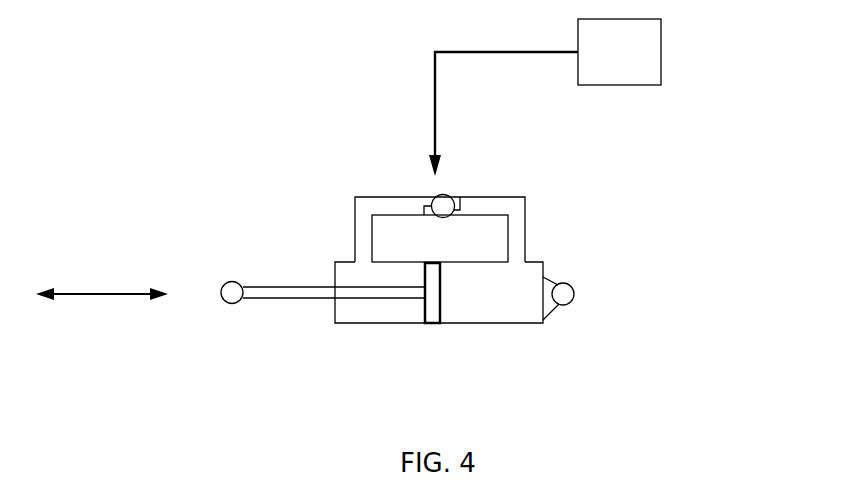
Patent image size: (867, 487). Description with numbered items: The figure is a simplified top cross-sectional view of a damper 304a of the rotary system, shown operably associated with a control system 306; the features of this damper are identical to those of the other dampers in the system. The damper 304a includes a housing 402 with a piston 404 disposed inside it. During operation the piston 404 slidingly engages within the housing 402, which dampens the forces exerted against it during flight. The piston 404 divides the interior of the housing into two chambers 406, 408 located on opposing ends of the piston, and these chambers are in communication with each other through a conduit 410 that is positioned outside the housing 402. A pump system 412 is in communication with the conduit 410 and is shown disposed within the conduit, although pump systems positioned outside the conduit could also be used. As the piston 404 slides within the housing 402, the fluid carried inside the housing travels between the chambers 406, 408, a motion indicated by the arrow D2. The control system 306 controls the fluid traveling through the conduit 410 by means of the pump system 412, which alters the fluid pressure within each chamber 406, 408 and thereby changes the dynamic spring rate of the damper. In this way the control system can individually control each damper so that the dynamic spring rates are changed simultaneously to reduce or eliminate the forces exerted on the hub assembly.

The damper 304a is at (262, 100).
The control system 306 is at (661, 43).
The housing 402 is at (334, 310).
The piston 404 is at (428, 325).
The chamber 406 is at (355, 274).
The chamber 408 is at (512, 287).
The conduit 410 is at (355, 218).
The pump system 412 is at (436, 196).
The arrow D2 is at (95, 295).